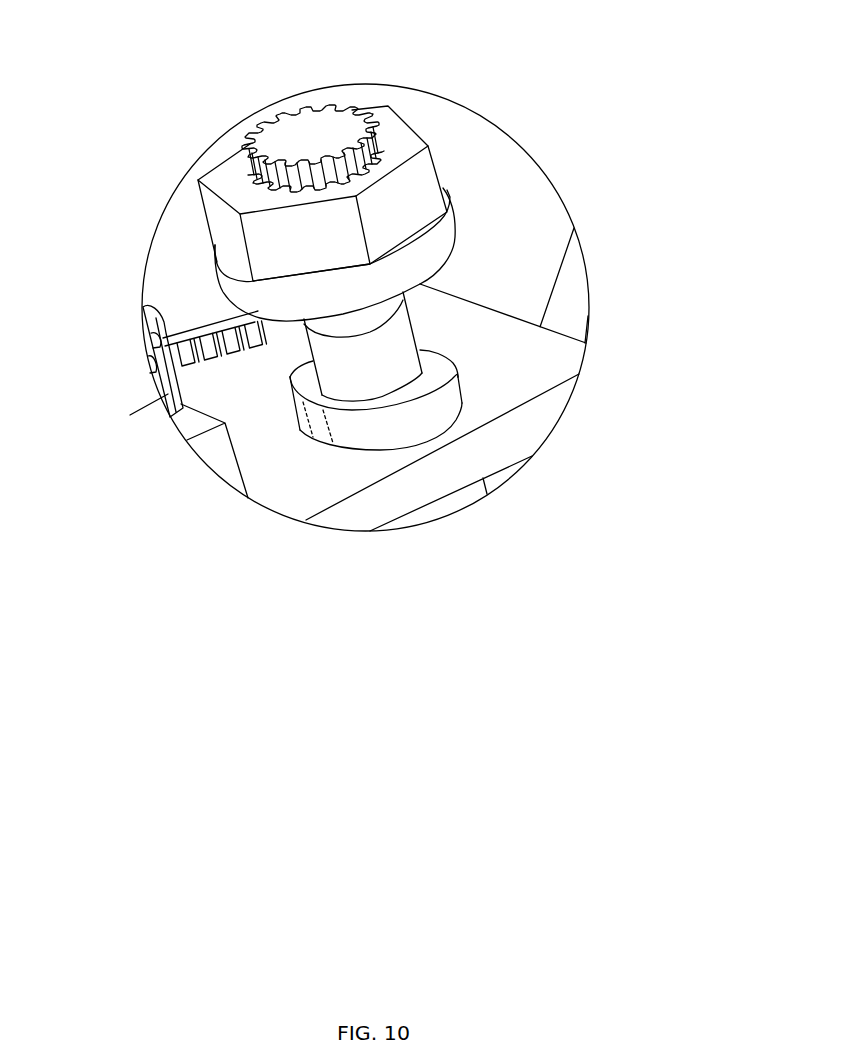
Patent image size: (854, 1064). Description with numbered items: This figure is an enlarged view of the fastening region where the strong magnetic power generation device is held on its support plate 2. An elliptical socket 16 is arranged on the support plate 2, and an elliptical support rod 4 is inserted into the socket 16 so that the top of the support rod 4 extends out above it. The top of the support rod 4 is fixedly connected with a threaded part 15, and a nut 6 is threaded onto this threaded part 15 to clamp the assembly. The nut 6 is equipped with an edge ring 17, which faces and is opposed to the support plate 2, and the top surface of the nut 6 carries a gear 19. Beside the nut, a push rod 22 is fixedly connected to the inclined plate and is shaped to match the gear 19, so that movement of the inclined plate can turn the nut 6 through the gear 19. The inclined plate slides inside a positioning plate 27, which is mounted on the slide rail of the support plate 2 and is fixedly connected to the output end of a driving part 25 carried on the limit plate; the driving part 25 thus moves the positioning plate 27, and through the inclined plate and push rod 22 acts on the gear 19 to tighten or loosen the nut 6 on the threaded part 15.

The support plate 2 is at (437, 482).
The support rod 4 is at (450, 390).
The nut 6 is at (395, 198).
The threaded part 15 is at (390, 360).
The socket 16 is at (437, 430).
The edge ring 17 is at (440, 243).
The gear 19 is at (327, 133).
The push rod 22 is at (198, 328).
The driving part 25 is at (213, 460).
The positioning plate 27 is at (165, 393).